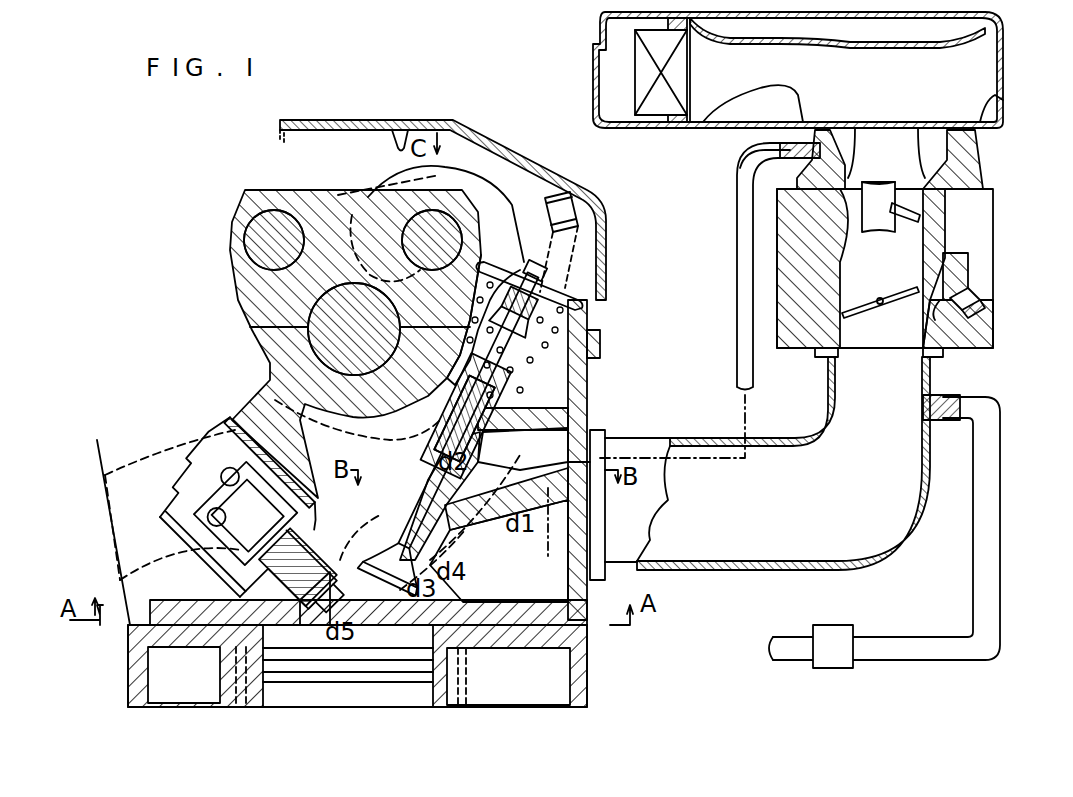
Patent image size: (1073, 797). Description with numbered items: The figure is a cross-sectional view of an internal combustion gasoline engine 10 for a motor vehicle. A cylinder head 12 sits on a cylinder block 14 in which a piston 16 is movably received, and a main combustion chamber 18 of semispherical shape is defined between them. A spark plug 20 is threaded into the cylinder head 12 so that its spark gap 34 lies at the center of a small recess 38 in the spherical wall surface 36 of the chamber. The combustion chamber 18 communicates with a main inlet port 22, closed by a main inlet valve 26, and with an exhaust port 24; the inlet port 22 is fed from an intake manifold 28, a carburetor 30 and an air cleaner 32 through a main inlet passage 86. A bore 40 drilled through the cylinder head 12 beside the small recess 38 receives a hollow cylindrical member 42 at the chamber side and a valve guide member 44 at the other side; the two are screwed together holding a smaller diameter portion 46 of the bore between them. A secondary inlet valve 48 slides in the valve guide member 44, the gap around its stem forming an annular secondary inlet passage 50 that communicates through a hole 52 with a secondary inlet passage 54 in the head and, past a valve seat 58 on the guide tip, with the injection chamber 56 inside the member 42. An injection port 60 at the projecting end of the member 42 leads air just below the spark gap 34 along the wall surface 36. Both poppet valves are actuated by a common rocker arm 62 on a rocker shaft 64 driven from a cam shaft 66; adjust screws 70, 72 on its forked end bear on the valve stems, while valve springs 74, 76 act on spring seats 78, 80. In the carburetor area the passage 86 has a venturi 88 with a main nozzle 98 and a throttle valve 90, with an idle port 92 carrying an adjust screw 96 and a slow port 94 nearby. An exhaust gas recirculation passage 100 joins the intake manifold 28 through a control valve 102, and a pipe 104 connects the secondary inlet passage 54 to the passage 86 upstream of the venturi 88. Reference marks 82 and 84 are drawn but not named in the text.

The internal combustion gasoline engine 10 is at (228, 372).
The cylinder head 12 is at (590, 587).
The cylinder block 14 is at (590, 670).
The piston 16 is at (433, 687).
The main combustion chamber 18 is at (320, 672).
The spark plug 20 is at (232, 427).
The main inlet port 22 is at (555, 520).
The exhaust port 24 is at (165, 470).
The main inlet valve 26 is at (588, 372).
The intake manifold 28 is at (712, 570).
The carburetor 30 is at (993, 320).
The air cleaner 32 is at (1003, 38).
The spark gap 34 is at (260, 640).
The spherical wall surface 36 is at (232, 610).
The small recess 38 is at (345, 550).
The bore 40 is at (455, 400).
The hollow cylindrical member 42 is at (385, 600).
The valve guide member 44 is at (450, 375).
The smaller diameter portion 46 is at (455, 520).
The secondary inlet valve 48 is at (523, 439).
The annular secondary inlet passage 50 is at (430, 500).
The hole 52 is at (440, 500).
The secondary inlet passage 54 is at (592, 500).
The injection chamber 56 is at (367, 597).
The valve seat 58 is at (418, 535).
The injection port 60 is at (400, 690).
The rocker arm 62 is at (512, 183).
The rocker shaft 64 is at (470, 235).
The cam shaft 66 is at (308, 302).
The adjust screw 70 is at (568, 195).
The adjust screw 72 is at (560, 250).
The valve spring 74 is at (602, 343).
The valve spring 76 is at (568, 350).
The spring seat 78 is at (560, 275).
The spring seat 80 is at (565, 295).
The chamber edge 82 is at (350, 490).
The squish land 84 is at (365, 520).
The main inlet passage 86 is at (892, 430).
The venturi 88 is at (864, 225).
The throttle valve 90 is at (895, 290).
The idle port 92 is at (925, 312).
The slow port 94 is at (940, 258).
The adjust screw 96 is at (968, 308).
The main nozzle 98 is at (908, 200).
The exhaust gas recirculation passage 100 is at (905, 662).
The control valve 102 is at (838, 670).
The pipe 104 is at (733, 335).